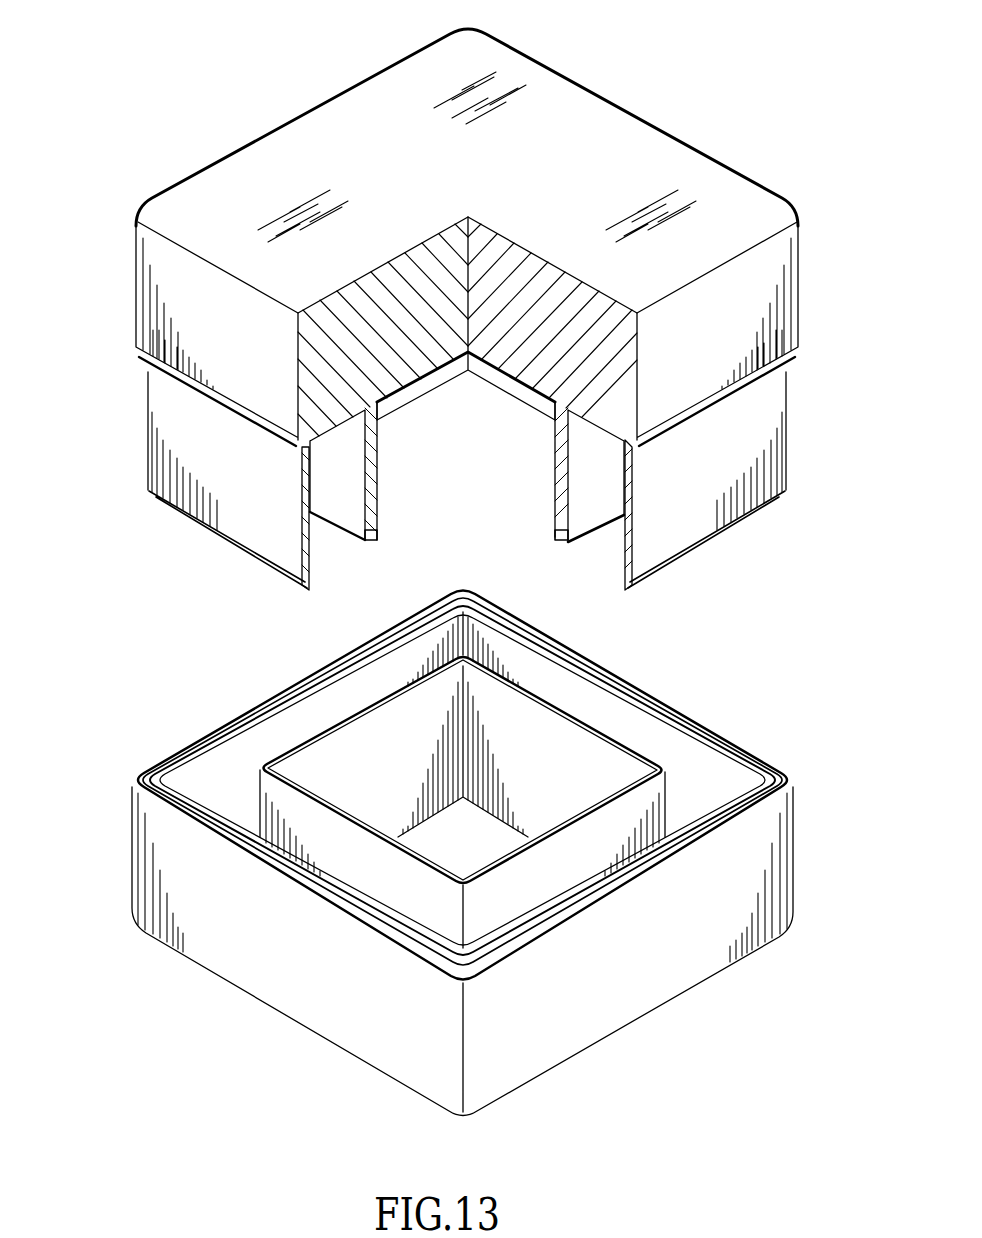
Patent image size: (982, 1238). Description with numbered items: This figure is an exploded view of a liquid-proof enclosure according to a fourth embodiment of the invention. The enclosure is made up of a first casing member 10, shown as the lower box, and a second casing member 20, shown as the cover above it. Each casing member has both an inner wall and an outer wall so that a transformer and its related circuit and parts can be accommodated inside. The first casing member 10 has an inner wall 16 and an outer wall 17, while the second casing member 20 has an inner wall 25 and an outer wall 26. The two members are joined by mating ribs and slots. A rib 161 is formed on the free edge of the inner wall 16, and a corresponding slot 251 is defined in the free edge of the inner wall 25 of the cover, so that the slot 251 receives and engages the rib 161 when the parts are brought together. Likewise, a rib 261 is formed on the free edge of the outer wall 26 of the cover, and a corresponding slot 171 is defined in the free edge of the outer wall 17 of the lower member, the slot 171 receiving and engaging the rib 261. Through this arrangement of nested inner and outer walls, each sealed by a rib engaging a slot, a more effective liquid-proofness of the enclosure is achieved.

The second casing member 20 is at (637, 150).
The outer wall 26 is at (160, 401).
The rib 261 is at (185, 520).
The inner wall 25 is at (372, 460).
The slot 251 is at (558, 541).
The first casing member 10 is at (152, 855).
The slot 171 is at (222, 735).
The outer wall 17 is at (700, 770).
The inner wall 16 is at (643, 807).
The rib 161 is at (600, 727).